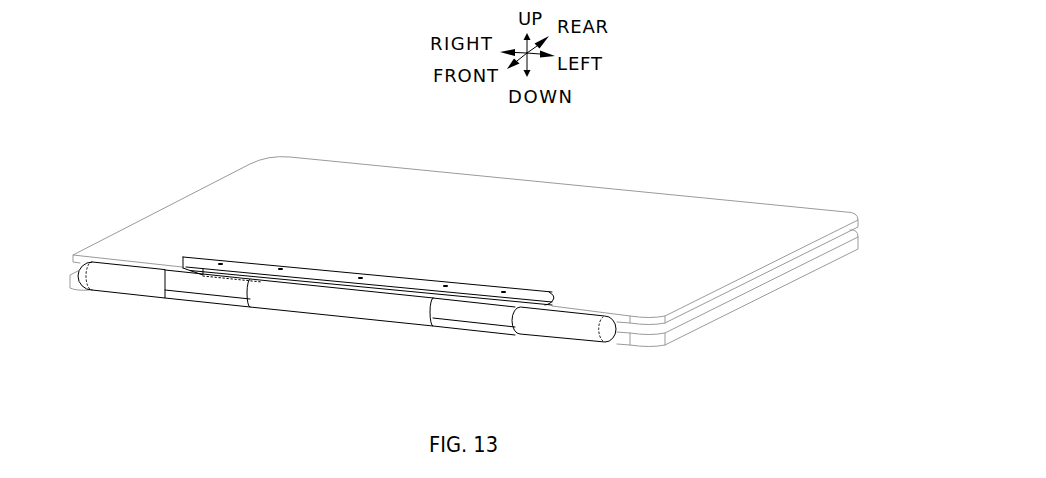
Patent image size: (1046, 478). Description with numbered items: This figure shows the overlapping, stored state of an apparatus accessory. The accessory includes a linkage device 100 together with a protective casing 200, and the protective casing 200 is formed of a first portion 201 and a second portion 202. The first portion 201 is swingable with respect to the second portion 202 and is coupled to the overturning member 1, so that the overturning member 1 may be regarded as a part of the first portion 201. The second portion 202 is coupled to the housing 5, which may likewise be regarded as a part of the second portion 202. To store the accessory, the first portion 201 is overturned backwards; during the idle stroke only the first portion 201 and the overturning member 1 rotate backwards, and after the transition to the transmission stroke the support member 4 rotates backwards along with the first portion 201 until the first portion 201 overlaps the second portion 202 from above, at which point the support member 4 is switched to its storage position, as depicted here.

The linkage device 100 is at (169, 324).
The protective casing 200 is at (806, 156).
The first portion 201 is at (697, 218).
The second portion 202 is at (752, 297).
The overturning member 1 is at (347, 303).
The support member 4 is at (558, 327).
The housing 5 is at (477, 318).